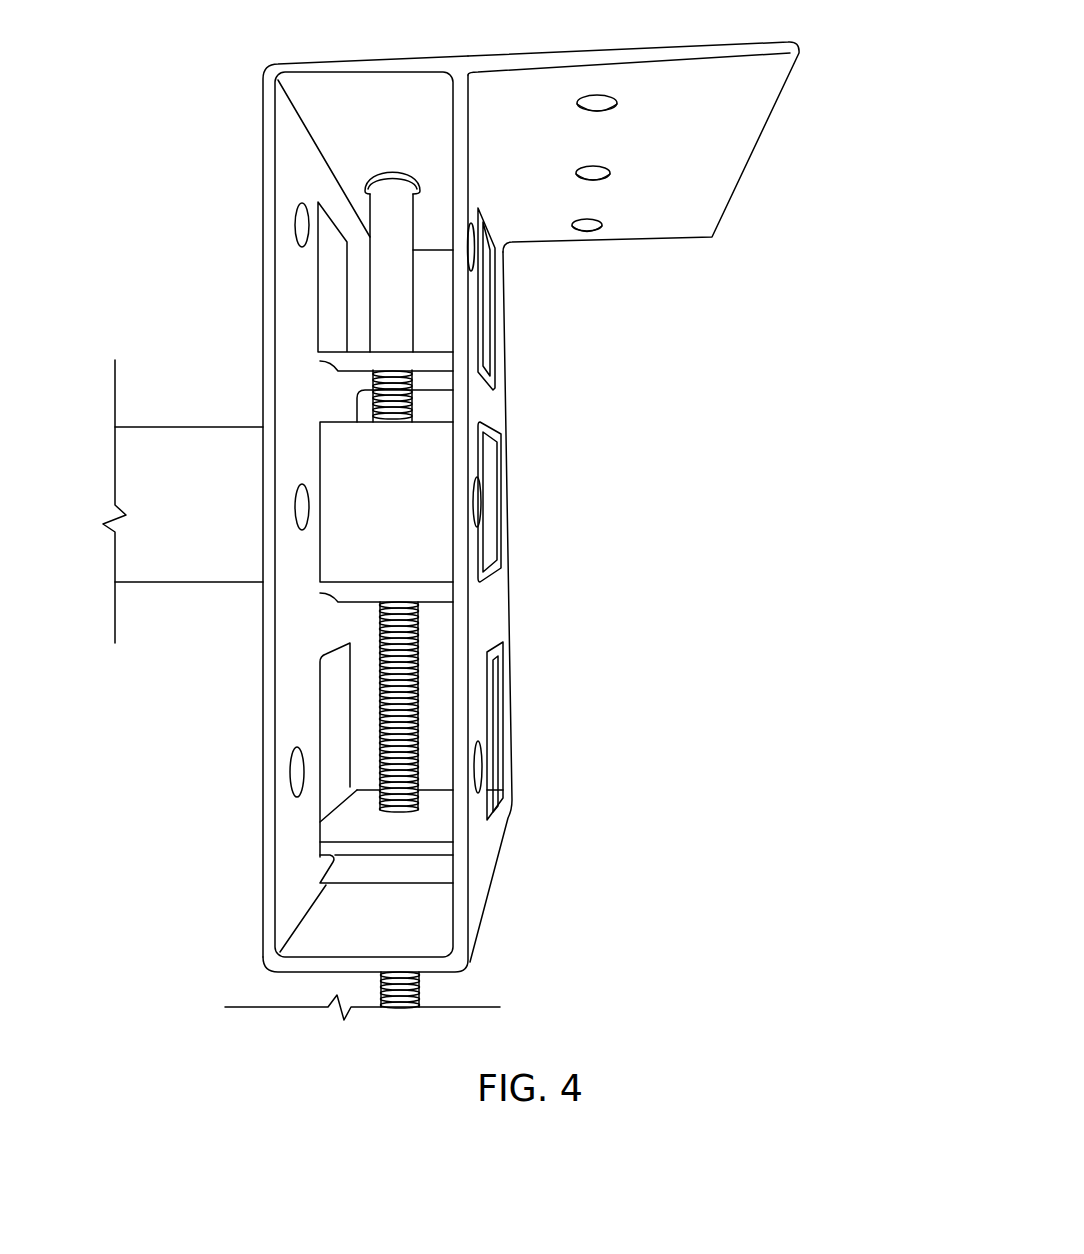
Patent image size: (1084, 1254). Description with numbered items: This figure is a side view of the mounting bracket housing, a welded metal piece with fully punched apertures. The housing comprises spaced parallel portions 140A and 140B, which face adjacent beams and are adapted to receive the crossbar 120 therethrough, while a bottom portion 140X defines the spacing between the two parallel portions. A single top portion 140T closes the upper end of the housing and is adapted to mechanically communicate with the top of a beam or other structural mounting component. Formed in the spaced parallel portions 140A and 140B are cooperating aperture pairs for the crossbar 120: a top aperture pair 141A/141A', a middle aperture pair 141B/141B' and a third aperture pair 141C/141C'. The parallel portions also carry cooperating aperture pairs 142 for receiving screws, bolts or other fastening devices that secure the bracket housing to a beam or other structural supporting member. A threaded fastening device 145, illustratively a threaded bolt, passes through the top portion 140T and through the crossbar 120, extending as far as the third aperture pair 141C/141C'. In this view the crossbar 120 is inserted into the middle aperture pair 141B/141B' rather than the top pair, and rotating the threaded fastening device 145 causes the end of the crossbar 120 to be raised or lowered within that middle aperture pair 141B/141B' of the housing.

The crossbar 120 is at (166, 427).
The spaced parallel portion 140A is at (263, 158).
The spaced parallel portion 140B is at (495, 410).
The top portion 140T is at (632, 62).
The bottom portion 140X is at (377, 938).
The first aperture pair 141A is at (307, 286).
The second aperture pair 141B is at (328, 492).
The third aperture pair 141C is at (200, 732).
The top aperture pair counterpart 141A' is at (541, 299).
The middle aperture pair counterpart 141B' is at (566, 502).
The third aperture pair counterpart 141C' is at (560, 731).
The cooperating aperture pairs 142 is at (295, 515).
The threaded fastening device 145 is at (407, 275).